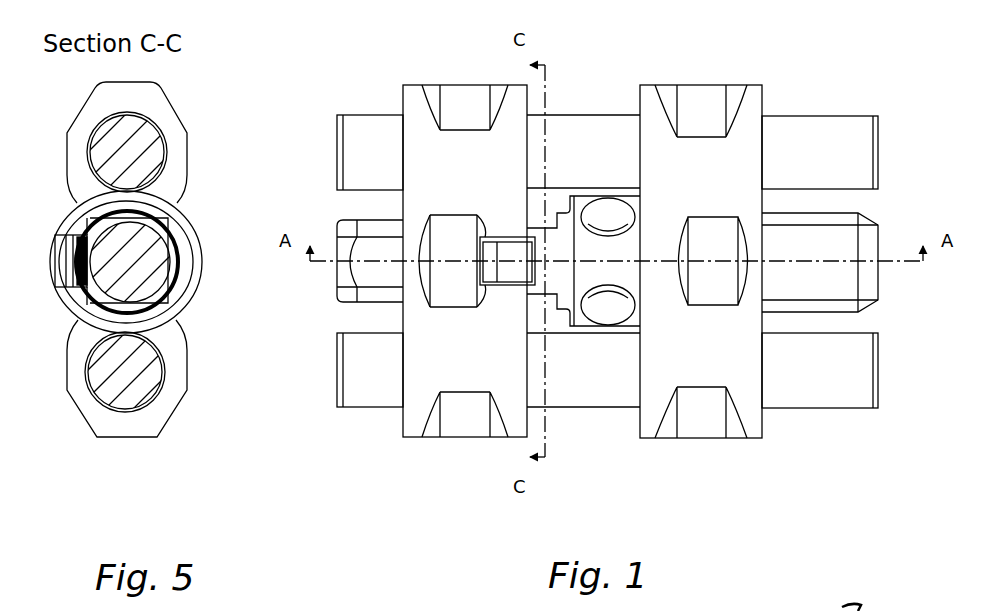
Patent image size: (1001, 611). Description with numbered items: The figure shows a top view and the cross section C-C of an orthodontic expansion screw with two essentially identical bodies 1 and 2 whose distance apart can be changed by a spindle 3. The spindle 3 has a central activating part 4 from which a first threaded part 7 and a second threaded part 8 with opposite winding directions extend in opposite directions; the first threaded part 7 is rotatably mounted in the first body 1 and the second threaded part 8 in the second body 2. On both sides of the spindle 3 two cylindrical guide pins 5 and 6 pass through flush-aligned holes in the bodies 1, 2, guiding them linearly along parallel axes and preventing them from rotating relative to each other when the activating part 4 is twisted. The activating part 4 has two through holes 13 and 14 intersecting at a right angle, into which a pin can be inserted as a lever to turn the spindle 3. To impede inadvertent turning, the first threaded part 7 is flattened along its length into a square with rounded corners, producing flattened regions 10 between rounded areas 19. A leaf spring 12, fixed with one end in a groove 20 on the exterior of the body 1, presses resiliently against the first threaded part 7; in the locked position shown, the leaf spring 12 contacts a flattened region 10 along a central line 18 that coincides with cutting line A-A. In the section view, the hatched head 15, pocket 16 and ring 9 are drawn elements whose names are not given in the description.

In FIG. 5, the first body 1 is at (165, 101).
In FIG. 1, the first body 1 is at (413, 98).
In FIG. 1, the second body 2 is at (753, 96).
In FIG. 1, the spindle 3 is at (850, 217).
In FIG. 1, the activating part 4 is at (580, 225).
In FIG. 5, the guide pin 5 is at (150, 152).
In FIG. 1, the guide pin 5 is at (354, 124).
In FIG. 5, the guide pin 6 is at (123, 395).
In FIG. 1, the guide pin 6 is at (383, 399).
In FIG. 5, the first threaded part 7 is at (149, 275).
In FIG. 1, the first threaded part 7 is at (342, 288).
In FIG. 1, the second threaded part 8 is at (824, 287).
In FIG. 5, the ring 9 is at (130, 302).
In FIG. 5, the flattened region 10 is at (169, 245).
In FIG. 1, the flattened region 10 is at (358, 274).
In FIG. 5, the leaf spring 12 is at (80, 256).
In FIG. 1, the leaf spring 12 is at (512, 273).
In FIG. 1, the through hole 13 is at (615, 312).
In FIG. 1, the through hole 14 is at (610, 207).
In FIG. 1, the ball head 15 is at (445, 290).
In FIG. 1, the recess 16 is at (457, 97).
In FIG. 1, the central line 18 is at (797, 260).
In FIG. 5, the rounded area 19 is at (162, 293).
In FIG. 1, the rounded area 19 is at (373, 227).
In FIG. 1, the groove 20 is at (482, 248).